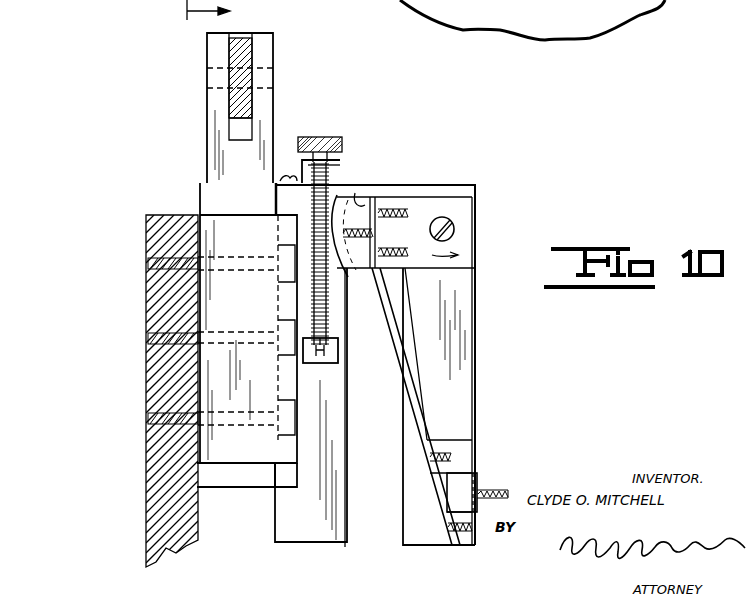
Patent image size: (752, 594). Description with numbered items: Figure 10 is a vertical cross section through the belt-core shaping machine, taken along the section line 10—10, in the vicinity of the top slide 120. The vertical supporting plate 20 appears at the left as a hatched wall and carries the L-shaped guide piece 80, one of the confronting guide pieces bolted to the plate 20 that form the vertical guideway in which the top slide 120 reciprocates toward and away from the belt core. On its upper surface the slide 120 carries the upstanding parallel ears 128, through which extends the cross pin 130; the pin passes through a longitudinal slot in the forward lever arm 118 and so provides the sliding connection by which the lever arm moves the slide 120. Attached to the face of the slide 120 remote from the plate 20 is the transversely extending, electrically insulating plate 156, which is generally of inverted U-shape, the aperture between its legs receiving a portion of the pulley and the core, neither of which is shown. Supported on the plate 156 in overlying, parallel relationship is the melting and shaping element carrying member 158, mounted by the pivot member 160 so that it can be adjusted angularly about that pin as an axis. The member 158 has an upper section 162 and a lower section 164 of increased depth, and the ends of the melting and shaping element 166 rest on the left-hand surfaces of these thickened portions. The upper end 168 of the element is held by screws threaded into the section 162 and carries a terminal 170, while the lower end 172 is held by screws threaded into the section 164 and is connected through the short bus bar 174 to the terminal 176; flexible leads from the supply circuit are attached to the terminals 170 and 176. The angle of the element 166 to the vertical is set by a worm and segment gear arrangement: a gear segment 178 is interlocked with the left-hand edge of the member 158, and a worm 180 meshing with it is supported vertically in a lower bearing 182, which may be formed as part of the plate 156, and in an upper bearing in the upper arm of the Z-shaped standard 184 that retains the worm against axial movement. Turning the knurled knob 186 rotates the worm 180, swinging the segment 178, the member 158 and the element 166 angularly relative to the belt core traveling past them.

The section line 10 is at (188, 11).
The vertical supporting plate 20 is at (146, 507).
The L-shaped guide piece 80 is at (207, 438).
The forward lever arm 118 is at (243, 40).
The top slide 120 is at (237, 488).
The upstanding parallel ears 128 is at (273, 100).
The cross pin 130 is at (225, 92).
The electrically insulating plate 156 is at (475, 190).
The melting and shaping element carrying member 158 is at (462, 350).
The pivot member 160 is at (454, 231).
The upper section 162 is at (468, 264).
The lower section 164 is at (462, 458).
The melting and shaping element 166 is at (392, 340).
The upper end of element 168 is at (365, 198).
The terminal 170 is at (376, 232).
The lower end of element 172 is at (455, 505).
The short bus bar 174 is at (446, 488).
The terminal 176 is at (500, 492).
The gear segment 178 is at (347, 280).
The worm 180 is at (313, 295).
The lower bearing 182 is at (335, 364).
The Z-shaped standard 184 is at (282, 176).
The knurled knob 186 is at (340, 140).